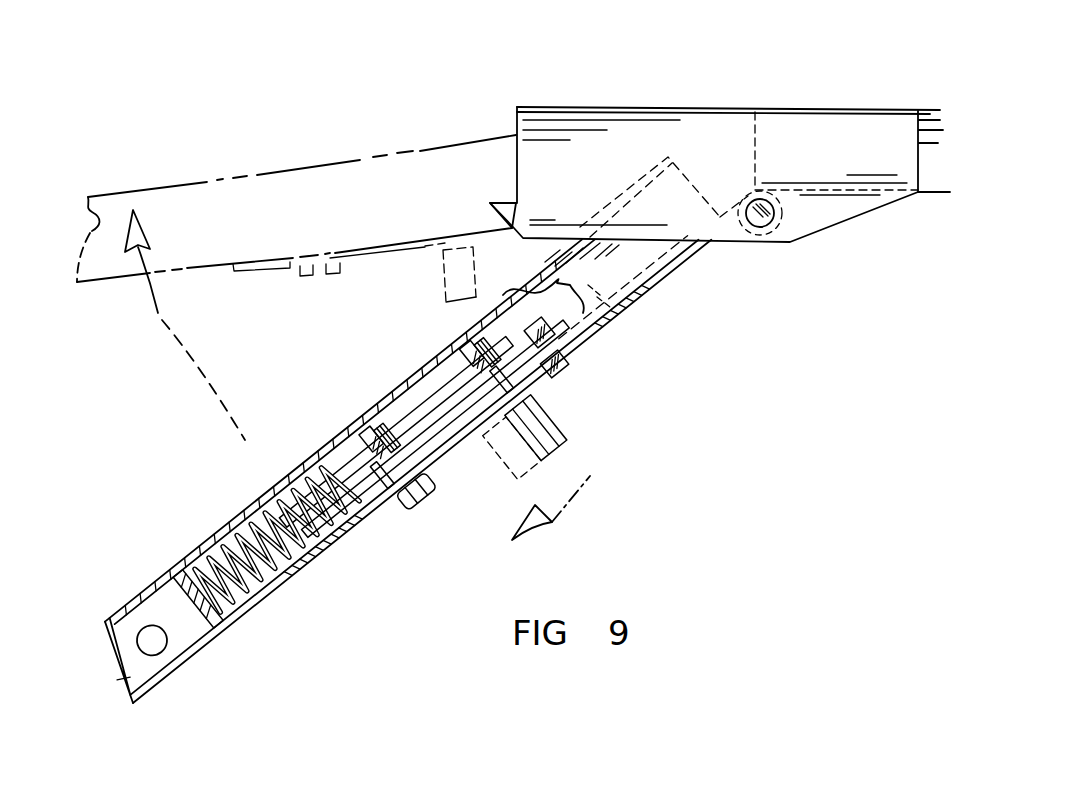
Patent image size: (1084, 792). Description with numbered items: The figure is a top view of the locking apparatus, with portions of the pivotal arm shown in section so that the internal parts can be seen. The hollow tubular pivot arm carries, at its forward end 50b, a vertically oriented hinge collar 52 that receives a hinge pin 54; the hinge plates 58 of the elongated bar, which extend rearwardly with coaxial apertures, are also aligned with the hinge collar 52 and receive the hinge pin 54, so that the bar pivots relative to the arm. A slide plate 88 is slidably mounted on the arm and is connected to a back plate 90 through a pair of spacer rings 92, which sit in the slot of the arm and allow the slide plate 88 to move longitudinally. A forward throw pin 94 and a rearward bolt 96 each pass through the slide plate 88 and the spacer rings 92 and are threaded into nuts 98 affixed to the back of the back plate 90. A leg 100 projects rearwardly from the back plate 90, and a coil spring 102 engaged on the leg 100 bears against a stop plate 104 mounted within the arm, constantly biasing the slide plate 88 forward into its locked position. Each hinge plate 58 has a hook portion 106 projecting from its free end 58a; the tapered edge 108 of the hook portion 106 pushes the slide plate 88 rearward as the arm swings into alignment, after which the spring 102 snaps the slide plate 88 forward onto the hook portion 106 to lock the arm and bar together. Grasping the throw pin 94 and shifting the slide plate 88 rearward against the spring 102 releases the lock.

The forward end of pivotal arm 50b is at (593, 297).
The hinge collar 52 is at (660, 280).
The hinge pin 54 is at (763, 226).
The hinge plates 58 is at (685, 123).
The free end of hinge plate 58a is at (557, 143).
The slide plate 88 is at (553, 372).
The back plate 90 is at (535, 335).
The spacer rings 92 is at (505, 383).
The throw pin 94 is at (557, 433).
The bolt 96 is at (417, 493).
The nuts 98 is at (477, 360).
The leg 100 is at (272, 538).
The coil spring 102 is at (247, 603).
The stop plate 104 is at (193, 604).
The hook portion 106 is at (500, 202).
The tapered edge 108 is at (510, 226).